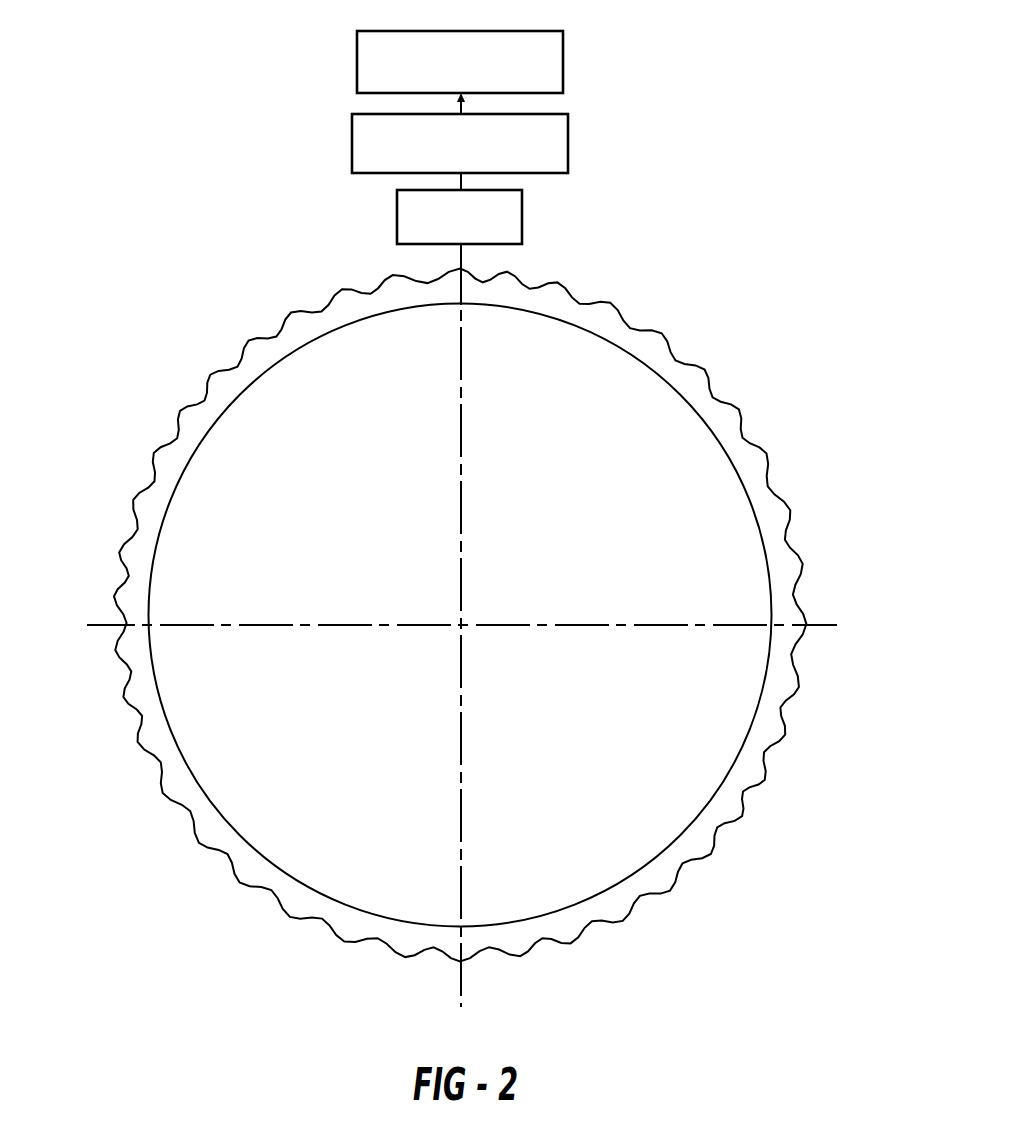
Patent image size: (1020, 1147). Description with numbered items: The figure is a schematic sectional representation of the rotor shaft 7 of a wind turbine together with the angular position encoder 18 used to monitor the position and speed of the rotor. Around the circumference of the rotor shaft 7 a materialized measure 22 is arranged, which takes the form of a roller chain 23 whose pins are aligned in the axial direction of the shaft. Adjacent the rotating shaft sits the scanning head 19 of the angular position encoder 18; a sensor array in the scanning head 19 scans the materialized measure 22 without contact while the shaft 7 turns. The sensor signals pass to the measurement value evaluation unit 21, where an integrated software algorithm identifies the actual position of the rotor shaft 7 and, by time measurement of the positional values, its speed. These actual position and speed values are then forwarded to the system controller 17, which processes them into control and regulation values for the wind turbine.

The rotor shaft 7 is at (565, 479).
The system controller 17 is at (357, 57).
The angular position encoder 18 is at (694, 255).
The scanning head 19 is at (523, 221).
The measurement value evaluation unit 21 is at (568, 127).
The materialized measure 22 is at (487, 615).
The roller chain 23 is at (773, 465).